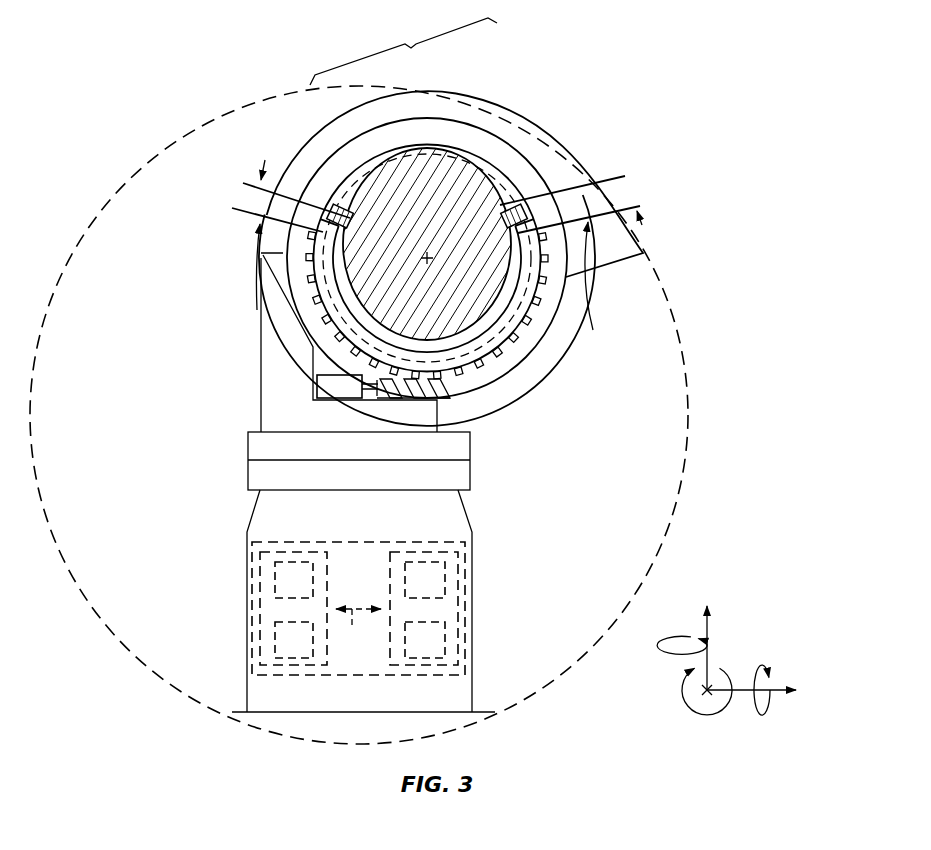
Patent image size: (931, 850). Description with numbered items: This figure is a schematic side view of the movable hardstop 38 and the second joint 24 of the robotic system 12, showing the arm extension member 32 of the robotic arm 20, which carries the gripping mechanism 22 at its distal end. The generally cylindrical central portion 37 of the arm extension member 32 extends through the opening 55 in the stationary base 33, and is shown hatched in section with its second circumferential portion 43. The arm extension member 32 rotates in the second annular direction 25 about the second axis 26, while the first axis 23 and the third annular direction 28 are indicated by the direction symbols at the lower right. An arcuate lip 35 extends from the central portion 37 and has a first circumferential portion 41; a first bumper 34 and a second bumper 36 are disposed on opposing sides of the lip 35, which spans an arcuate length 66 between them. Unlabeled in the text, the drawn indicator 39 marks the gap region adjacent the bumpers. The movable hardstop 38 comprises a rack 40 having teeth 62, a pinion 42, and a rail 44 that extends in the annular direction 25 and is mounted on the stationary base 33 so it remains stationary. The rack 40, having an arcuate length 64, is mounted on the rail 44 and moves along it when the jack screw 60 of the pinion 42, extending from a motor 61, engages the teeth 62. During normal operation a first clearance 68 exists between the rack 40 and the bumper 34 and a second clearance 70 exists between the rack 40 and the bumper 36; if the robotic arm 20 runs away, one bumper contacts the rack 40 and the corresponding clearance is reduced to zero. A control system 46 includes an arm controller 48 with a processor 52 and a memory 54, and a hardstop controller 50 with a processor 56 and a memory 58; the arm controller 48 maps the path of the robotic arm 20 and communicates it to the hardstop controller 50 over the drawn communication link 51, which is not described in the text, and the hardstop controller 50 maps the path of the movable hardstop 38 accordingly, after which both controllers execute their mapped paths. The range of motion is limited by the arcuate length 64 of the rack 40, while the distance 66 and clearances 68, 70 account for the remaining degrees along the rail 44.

The robotic system 12 is at (592, 85).
The robotic arm 20 is at (410, 46).
The gripping mechanism 22 is at (728, 626).
The first axis 23 is at (702, 614).
The second joint 24 is at (782, 696).
The second annular direction 25 is at (682, 696).
The second axis 26 is at (705, 700).
The third annular direction 28 is at (766, 676).
The arm extension member 32 is at (572, 277).
The stationary base 33 is at (378, 132).
The first bumper 34 is at (535, 232).
The lip 35 is at (493, 177).
The second bumper 36 is at (277, 190).
The central portion 37 is at (520, 211).
The movable hardstop 38 is at (529, 332).
The gap 39 is at (575, 186).
The rack 40 is at (530, 315).
The first circumferential portion 41 is at (470, 162).
The pinion 42 is at (328, 368).
The second circumferential portion 43 is at (333, 222).
The rail 44 is at (400, 160).
The control system 46 is at (358, 542).
The arm controller 48 is at (458, 615).
The hardstop controller 50 is at (260, 615).
The communication link 51 is at (352, 628).
The processor 52 is at (445, 586).
The memory 54 is at (445, 646).
The opening 55 is at (390, 187).
The processor 56 is at (275, 586).
The memory 58 is at (275, 646).
The jack screw 60 is at (445, 402).
The motor 61 is at (340, 388).
The teeth 62 is at (510, 352).
The arcuate length 64 is at (593, 280).
The arcuate length 66 is at (462, 95).
The first clearance 68 is at (612, 176).
The second clearance 70 is at (248, 213).